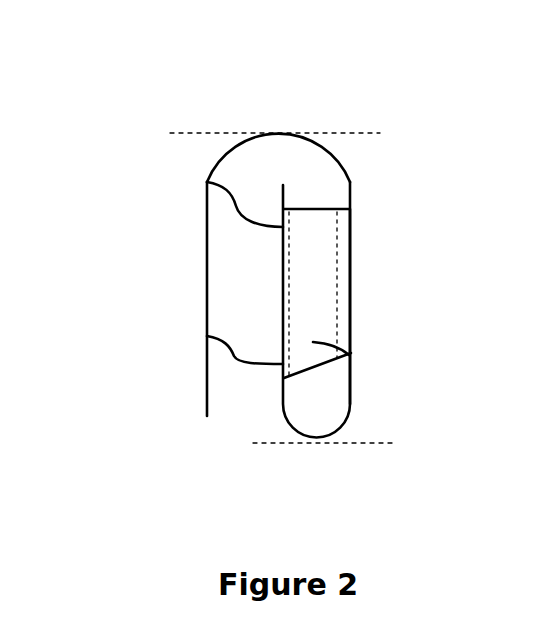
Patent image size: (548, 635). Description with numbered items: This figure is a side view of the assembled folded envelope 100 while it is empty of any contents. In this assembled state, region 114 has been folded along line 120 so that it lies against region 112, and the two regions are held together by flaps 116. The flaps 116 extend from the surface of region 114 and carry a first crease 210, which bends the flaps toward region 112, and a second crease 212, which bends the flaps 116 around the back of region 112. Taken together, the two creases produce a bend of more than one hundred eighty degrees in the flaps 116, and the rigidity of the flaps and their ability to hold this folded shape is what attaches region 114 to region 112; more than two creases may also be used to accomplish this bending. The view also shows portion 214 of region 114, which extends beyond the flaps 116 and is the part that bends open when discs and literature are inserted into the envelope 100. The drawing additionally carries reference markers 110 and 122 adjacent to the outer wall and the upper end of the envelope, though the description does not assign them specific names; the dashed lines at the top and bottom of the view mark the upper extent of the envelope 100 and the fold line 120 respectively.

The folded envelope 100 is at (218, 120).
The outer sleeve 110 is at (207, 269).
The region 112 is at (348, 182).
The region 114 is at (207, 337).
The flaps 116 is at (347, 353).
The line 120 is at (288, 445).
The top end plane 122 is at (335, 133).
The first crease 210 is at (288, 283).
The second crease 212 is at (335, 306).
The portion 214 is at (207, 182).